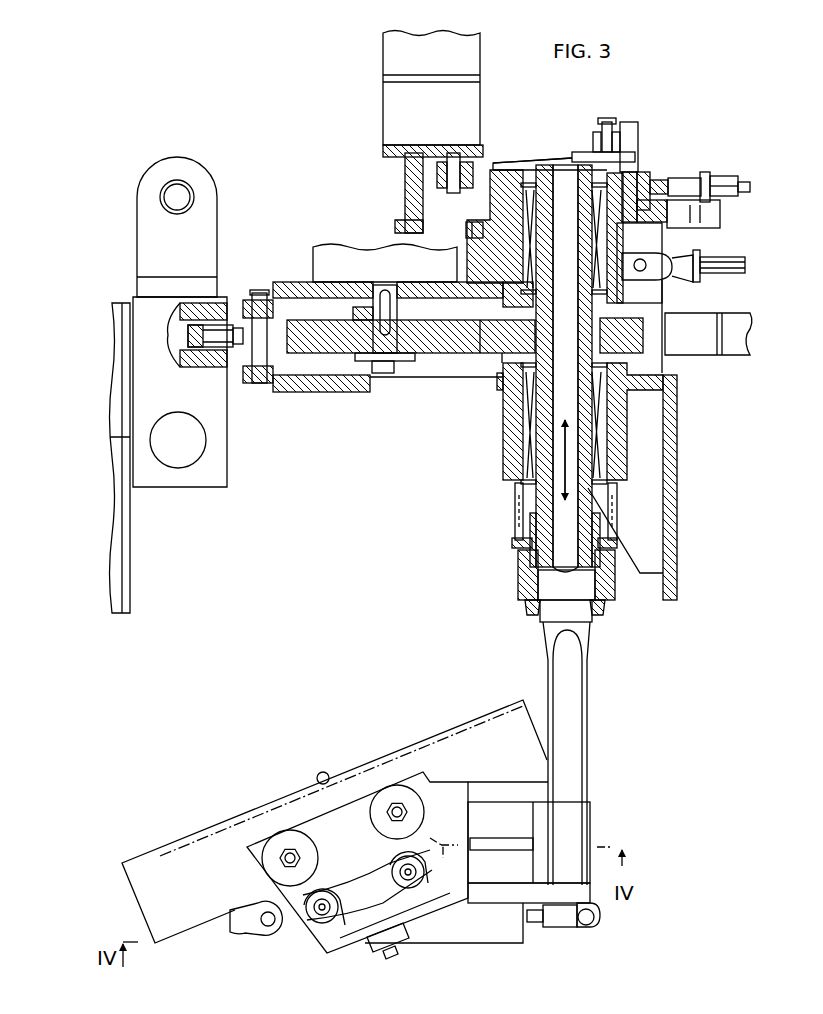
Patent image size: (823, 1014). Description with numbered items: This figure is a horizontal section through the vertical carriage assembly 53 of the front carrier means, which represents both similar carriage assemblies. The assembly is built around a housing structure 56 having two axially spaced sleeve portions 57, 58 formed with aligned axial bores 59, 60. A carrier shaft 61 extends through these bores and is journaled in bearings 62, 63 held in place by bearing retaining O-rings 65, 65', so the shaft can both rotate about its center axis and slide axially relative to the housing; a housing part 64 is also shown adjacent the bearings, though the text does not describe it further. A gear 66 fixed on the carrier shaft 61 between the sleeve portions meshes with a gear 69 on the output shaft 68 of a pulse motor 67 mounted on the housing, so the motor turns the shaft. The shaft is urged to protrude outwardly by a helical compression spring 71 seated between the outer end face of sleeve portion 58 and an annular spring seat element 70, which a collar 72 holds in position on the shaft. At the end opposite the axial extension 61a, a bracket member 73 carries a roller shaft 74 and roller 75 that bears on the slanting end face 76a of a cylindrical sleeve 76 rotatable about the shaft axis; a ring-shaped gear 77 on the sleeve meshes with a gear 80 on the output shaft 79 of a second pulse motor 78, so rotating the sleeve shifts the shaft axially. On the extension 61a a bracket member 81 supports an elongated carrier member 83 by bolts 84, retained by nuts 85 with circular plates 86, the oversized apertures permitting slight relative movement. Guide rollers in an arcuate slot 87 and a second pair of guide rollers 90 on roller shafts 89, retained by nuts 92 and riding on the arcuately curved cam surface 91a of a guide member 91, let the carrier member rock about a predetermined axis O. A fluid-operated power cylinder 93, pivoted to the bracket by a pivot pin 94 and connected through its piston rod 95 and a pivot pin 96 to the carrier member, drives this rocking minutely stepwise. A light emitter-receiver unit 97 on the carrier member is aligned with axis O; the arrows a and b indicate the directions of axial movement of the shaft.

The vertical carriage assembly 53 is at (430, 445).
The housing structure 56 is at (413, 232).
The sleeve portion 57 is at (628, 244).
The sleeve portion 58 is at (621, 432).
The axial bore 59 is at (518, 248).
The axial bore 60 is at (523, 413).
The carrier shaft 61 is at (578, 237).
The axial extension 61a is at (590, 712).
The bearing 62 is at (600, 285).
The bearing 63 is at (523, 450).
The housing cover 64 is at (536, 335).
The bearing retaining O-ring 65 is at (564, 352).
The bearing retaining O-ring 65' is at (540, 511).
The gear 66 is at (643, 336).
The pulse motor 67 is at (400, 278).
The output shaft 68 is at (398, 298).
The gear 69 is at (445, 353).
The annular spring seat element 70 is at (512, 543).
The helical compression spring 71 is at (515, 525).
The collar 72 is at (520, 586).
The bracket member 73 is at (590, 152).
The roller shaft 74 is at (608, 132).
The roller 75 is at (640, 130).
The cylindrical sleeve 76 is at (638, 166).
The slanting end face 76a is at (517, 165).
The ring-shaped gear 77 is at (672, 185).
The pulse motor 78 is at (444, 127).
The output shaft 79 is at (462, 166).
The gear 80 is at (430, 183).
The bracket member 81 is at (592, 825).
The carrier member 83 is at (505, 765).
The bolt 84 is at (282, 858).
The nut 85 is at (298, 852).
The circular plate 86 is at (290, 847).
The arcuate slot 87 is at (357, 888).
The roller shaft 89 is at (409, 880).
The guide roller 90 is at (395, 866).
The guide member 91 is at (328, 953).
The cam surface 91a is at (395, 915).
The nut 92 is at (420, 850).
The fluid-operated power cylinder 93 is at (492, 933).
The pivot pin 94 is at (585, 926).
The piston rod 95 is at (252, 926).
The pivot pin 96 is at (255, 910).
The light emitter-receiver unit 97 is at (316, 778).
The predetermined axis O is at (325, 772).
The direction a is at (563, 446).
The direction b is at (565, 474).